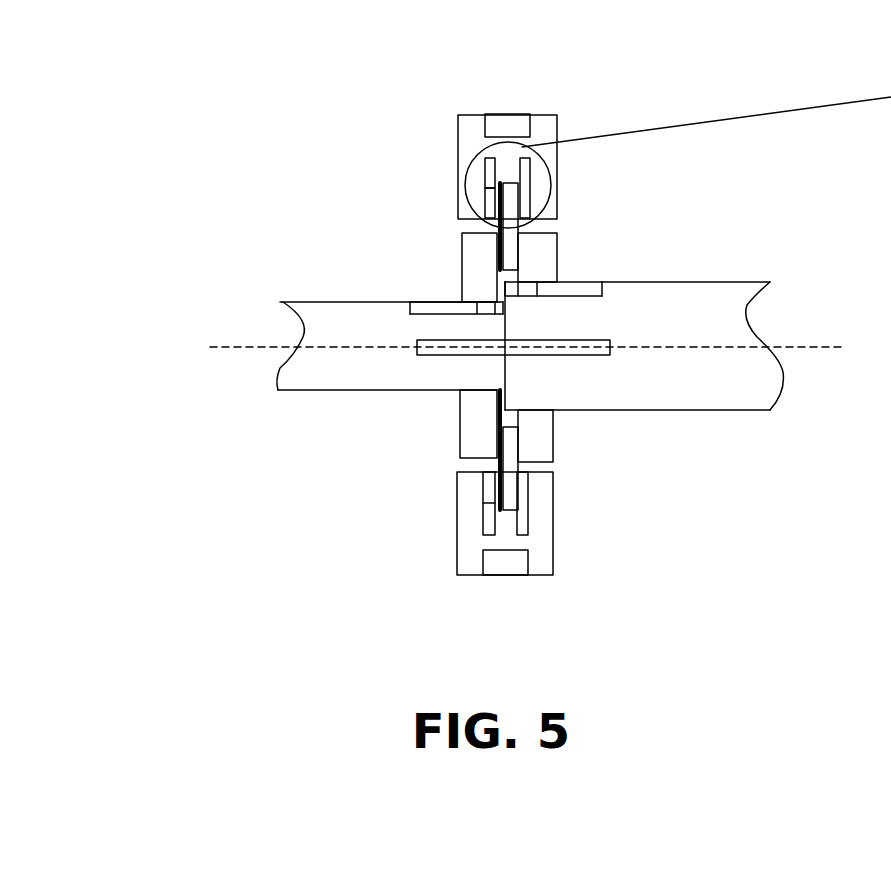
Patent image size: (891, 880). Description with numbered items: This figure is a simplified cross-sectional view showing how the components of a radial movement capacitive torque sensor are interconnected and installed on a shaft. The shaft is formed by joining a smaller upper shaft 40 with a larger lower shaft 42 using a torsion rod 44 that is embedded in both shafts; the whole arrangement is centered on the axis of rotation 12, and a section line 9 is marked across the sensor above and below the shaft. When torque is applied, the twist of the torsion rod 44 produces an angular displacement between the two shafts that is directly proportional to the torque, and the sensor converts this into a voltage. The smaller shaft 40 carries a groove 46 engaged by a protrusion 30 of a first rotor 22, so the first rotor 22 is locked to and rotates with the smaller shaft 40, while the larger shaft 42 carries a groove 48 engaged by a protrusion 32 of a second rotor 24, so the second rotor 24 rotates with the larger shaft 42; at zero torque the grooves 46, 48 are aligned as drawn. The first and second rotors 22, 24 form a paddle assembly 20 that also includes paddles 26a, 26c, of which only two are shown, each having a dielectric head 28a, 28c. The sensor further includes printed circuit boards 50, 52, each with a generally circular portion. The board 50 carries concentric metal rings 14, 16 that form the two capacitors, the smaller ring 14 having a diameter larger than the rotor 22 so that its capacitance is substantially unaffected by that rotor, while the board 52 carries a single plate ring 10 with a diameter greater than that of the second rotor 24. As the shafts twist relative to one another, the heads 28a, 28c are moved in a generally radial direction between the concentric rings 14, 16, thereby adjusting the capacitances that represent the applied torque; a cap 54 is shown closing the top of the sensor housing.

The section line 9- 9 is at (505, 105).
The single plate ring 10 is at (522, 488).
The axis of rotation 12 is at (822, 347).
The smaller concentric ring 14 is at (495, 206).
The larger concentric ring 16 is at (493, 168).
The paddle assembly 20 is at (584, 425).
The first rotor 22 is at (480, 434).
The second rotor 24 is at (542, 258).
The paddle 26a is at (498, 230).
The paddle 26c is at (507, 433).
The paddle head 28a is at (513, 205).
The paddle head 28c is at (507, 500).
The protrusion 30 is at (493, 308).
The protrusion 32 is at (528, 292).
The smaller shaft 40 is at (306, 302).
The larger shaft 42 is at (682, 297).
The torsion rod 44 is at (417, 347).
The groove 46 is at (412, 306).
The groove 48 is at (585, 290).
The printed circuit board 50 is at (467, 525).
The printed circuit board 52 is at (552, 583).
The upper cap 54 is at (518, 117).